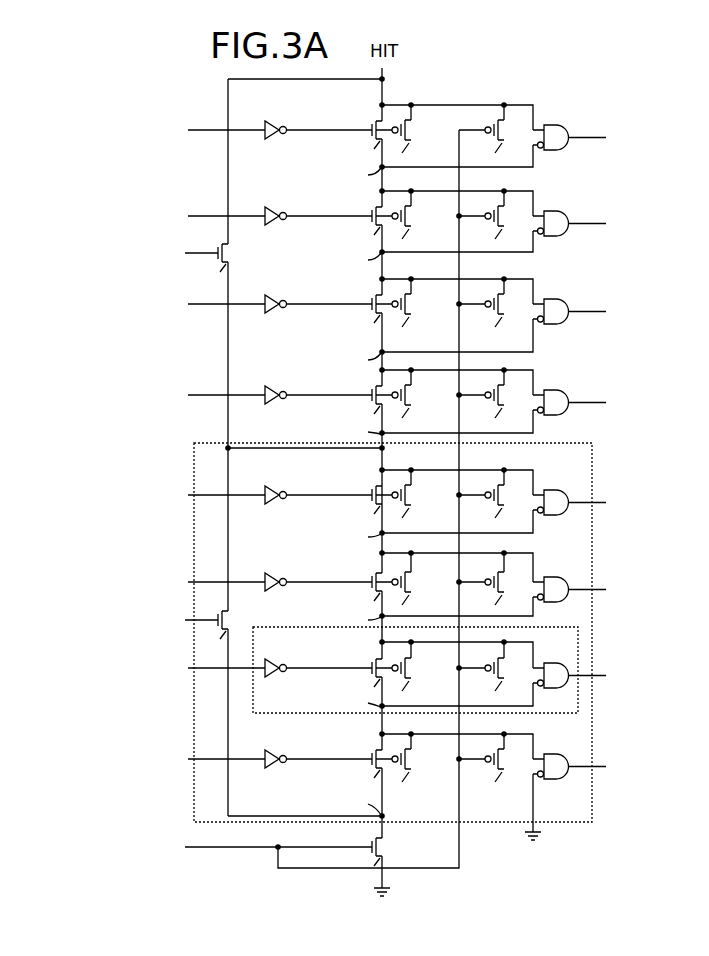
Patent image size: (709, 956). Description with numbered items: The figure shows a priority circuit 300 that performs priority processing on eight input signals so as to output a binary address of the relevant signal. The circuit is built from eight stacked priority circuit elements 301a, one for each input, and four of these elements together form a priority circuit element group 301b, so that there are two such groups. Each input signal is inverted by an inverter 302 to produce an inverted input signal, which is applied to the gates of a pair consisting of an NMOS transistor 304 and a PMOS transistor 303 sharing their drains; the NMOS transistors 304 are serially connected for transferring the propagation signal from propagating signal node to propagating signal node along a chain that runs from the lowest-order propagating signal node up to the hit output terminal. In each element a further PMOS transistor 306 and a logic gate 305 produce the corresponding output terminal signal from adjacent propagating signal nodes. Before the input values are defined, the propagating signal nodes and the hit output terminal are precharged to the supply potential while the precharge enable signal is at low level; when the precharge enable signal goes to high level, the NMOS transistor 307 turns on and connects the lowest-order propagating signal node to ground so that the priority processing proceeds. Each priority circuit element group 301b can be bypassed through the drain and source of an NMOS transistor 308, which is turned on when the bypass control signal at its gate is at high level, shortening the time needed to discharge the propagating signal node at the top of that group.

The priority circuit 300 is at (493, 43).
The priority circuit element 301a is at (587, 649).
The priority circuit element group 301b is at (600, 455).
The inverter 302 is at (278, 776).
The PMOS transistor 303 is at (432, 326).
The NMOS transistor 304 is at (372, 773).
The AND gate with inverted input 305 is at (557, 780).
The PMOS transistor 306 is at (509, 754).
The NMOS transistor 307 is at (383, 846).
The NMOS transistor 308 is at (238, 611).